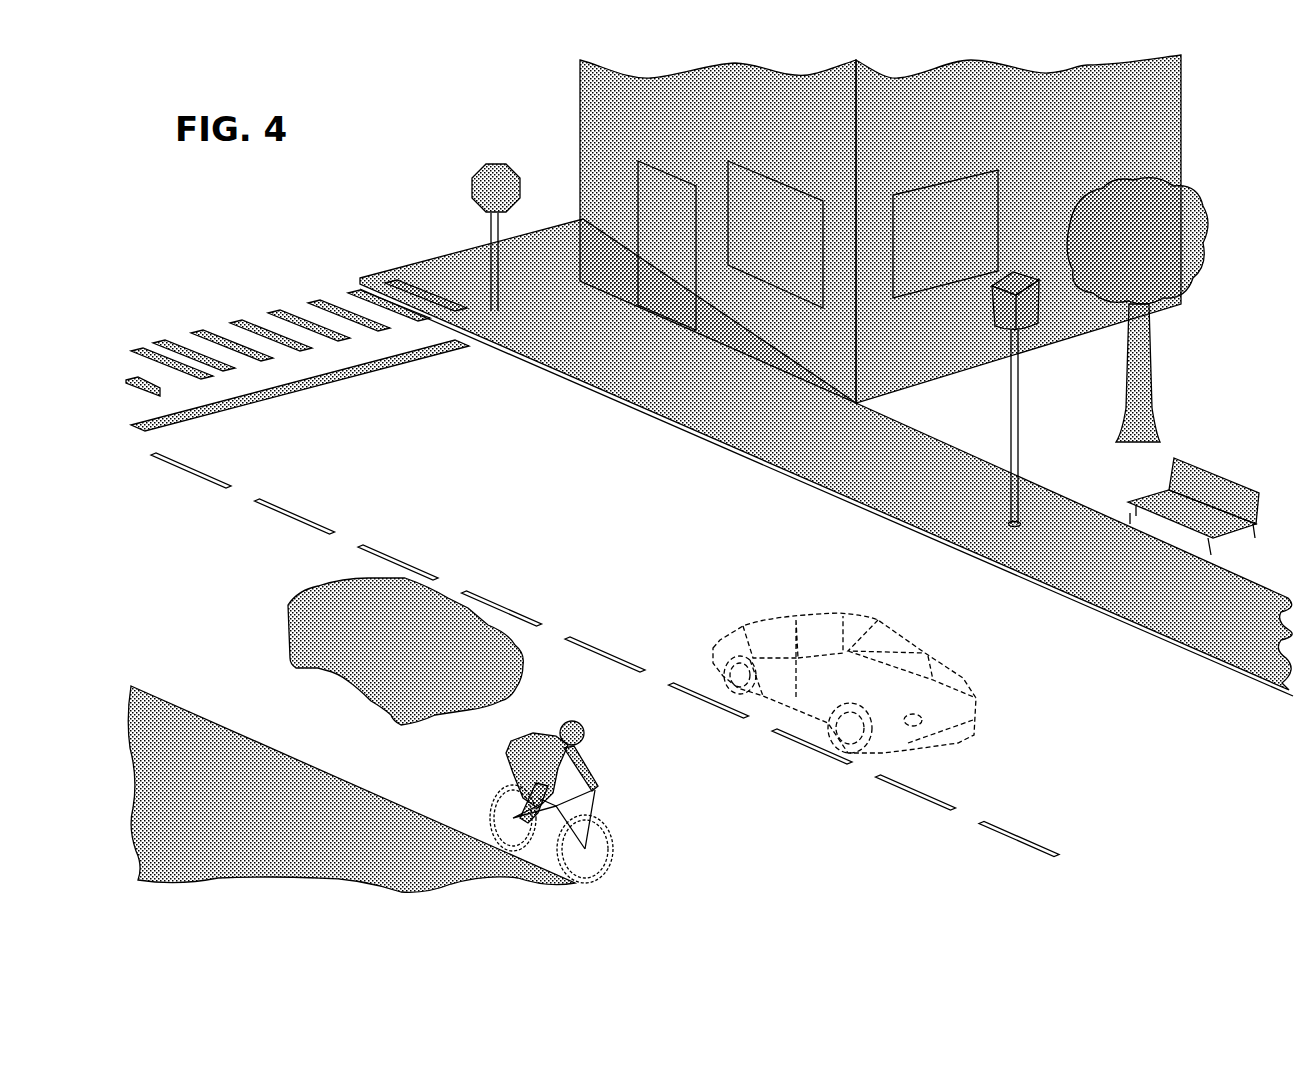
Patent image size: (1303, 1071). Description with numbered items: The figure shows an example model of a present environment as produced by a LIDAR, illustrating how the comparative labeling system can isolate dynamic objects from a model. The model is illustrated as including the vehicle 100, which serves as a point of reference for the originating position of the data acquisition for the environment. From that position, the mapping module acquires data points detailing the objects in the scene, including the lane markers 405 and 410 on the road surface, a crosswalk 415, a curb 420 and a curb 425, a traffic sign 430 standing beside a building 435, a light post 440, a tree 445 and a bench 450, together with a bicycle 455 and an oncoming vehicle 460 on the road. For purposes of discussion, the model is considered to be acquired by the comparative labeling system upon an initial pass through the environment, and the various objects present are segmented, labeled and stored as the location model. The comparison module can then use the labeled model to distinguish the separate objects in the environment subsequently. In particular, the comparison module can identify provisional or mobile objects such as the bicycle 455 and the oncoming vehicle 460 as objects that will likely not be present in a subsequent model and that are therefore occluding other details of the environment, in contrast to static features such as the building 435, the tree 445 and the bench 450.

The vehicle 100 is at (965, 685).
The lane marker 405 is at (300, 510).
The lane marker 410 is at (267, 397).
The crosswalk 415 is at (348, 337).
The curb 420 is at (327, 770).
The curb 425 is at (548, 362).
The traffic sign 430 is at (468, 172).
The building 435 is at (710, 332).
The light post 440 is at (1009, 416).
The tree 445 is at (1145, 356).
The bench 450 is at (1212, 470).
The bicycle 455 is at (515, 733).
The oncoming vehicle 460 is at (282, 607).